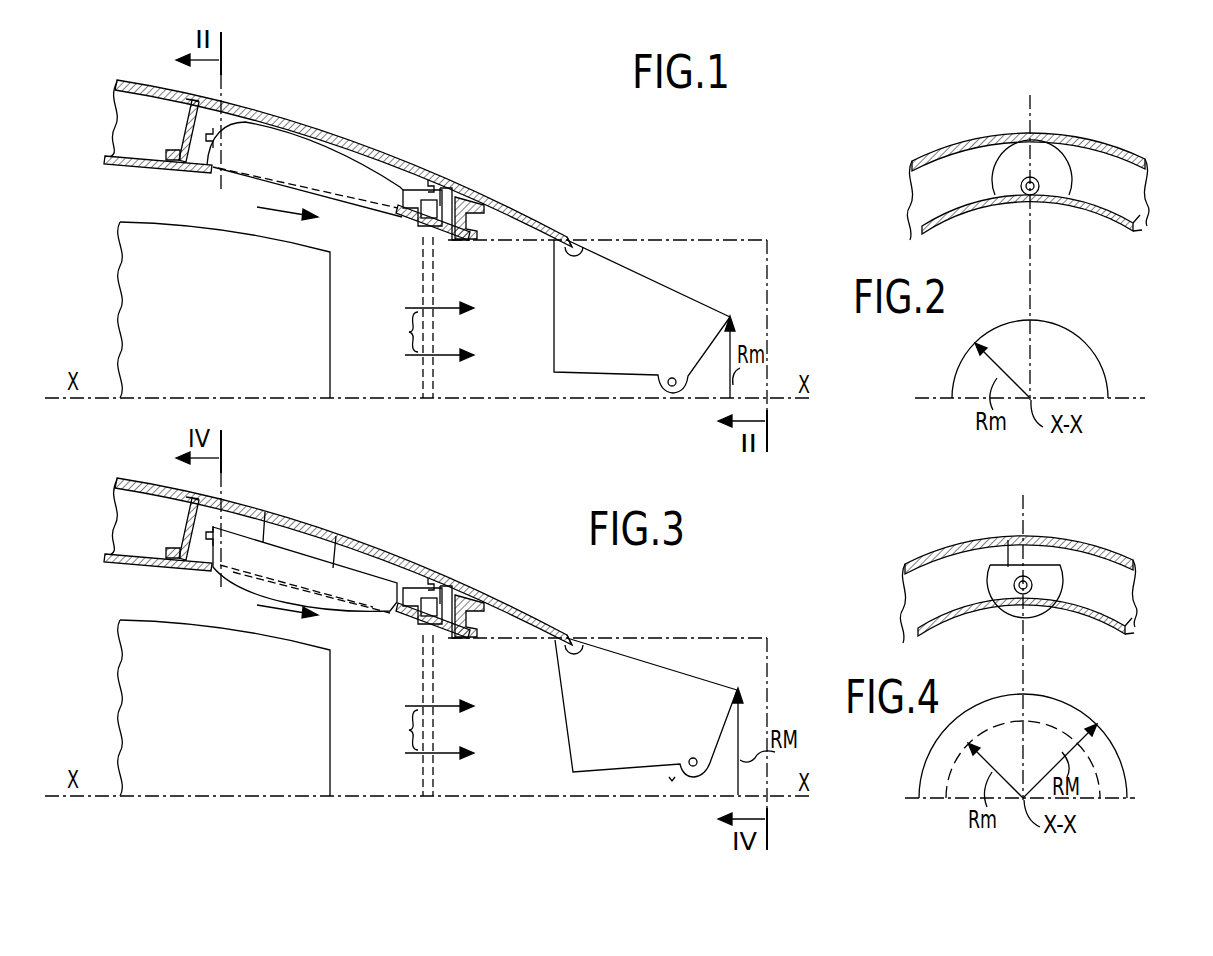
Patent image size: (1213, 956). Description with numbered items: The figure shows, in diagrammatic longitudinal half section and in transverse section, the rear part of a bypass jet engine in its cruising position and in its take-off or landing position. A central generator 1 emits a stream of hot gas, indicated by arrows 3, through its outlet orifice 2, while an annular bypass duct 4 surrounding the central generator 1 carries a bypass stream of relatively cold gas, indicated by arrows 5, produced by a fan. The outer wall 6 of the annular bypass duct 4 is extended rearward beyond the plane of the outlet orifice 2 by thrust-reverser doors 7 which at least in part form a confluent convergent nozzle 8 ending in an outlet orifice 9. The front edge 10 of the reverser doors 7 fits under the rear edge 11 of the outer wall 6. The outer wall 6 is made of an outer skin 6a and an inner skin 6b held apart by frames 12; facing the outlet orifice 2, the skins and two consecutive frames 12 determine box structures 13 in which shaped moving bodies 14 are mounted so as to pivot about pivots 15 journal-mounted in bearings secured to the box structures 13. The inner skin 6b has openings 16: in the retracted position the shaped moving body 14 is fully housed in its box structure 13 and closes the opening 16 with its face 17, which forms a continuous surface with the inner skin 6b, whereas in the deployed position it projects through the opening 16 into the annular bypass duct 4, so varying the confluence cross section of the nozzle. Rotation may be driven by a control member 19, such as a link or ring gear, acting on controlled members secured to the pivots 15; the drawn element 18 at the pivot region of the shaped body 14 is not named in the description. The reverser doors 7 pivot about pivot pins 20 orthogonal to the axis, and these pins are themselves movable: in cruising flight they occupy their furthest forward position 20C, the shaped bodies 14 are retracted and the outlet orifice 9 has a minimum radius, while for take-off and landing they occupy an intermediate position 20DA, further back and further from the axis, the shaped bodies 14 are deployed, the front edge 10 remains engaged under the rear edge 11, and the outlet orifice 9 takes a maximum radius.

In FIG. 1, the central generator 1 is at (242, 356).
In FIG. 3, the central generator 1 is at (224, 708).
In FIG. 1, the outlet orifice 2 is at (332, 372).
In FIG. 3, the outlet orifice 2 is at (427, 803).
In FIG. 1, the arrows (hot gas stream) 3 is at (437, 331).
In FIG. 3, the arrows (hot gas stream) 3 is at (437, 729).
In FIG. 1, the annular bypass duct 4 is at (185, 218).
In FIG. 3, the annular bypass duct 4 is at (177, 603).
In FIG. 1, the arrows (bypass stream) 5 is at (298, 223).
In FIG. 3, the arrows (bypass stream) 5 is at (298, 621).
In FIG. 1, the outer wall 6 is at (312, 118).
In FIG. 3, the outer wall 6 is at (328, 540).
In FIG. 1, the outer skin 6a is at (128, 80).
In FIG. 3, the outer skin 6a is at (332, 540).
In FIG. 2, the outer skin 6a is at (953, 150).
In FIG. 4, the outer skin 6a is at (948, 547).
In FIG. 1, the inner skin 6b is at (124, 170).
In FIG. 3, the inner skin 6b is at (277, 596).
In FIG. 1, the thrust-reverser doors 7 is at (640, 287).
In FIG. 3, the thrust-reverser doors 7 is at (640, 685).
In FIG. 1, the confluent convergent nozzle 8 is at (524, 347).
In FIG. 3, the confluent convergent nozzle 8 is at (524, 745).
In FIG. 3, the outlet orifice 9 is at (722, 743).
In FIG. 2, the outlet orifice 9 is at (1092, 388).
In FIG. 4, the outlet orifice 9 is at (1125, 783).
In FIG. 1, the front edge 10 is at (578, 251).
In FIG. 3, the front edge 10 is at (599, 615).
In FIG. 1, the rear edge 11 is at (567, 236).
In FIG. 3, the rear edge 11 is at (562, 608).
In FIG. 1, the frames 12 is at (183, 123).
In FIG. 3, the frames 12 is at (330, 583).
In FIG. 1, the box structures 13 is at (403, 167).
In FIG. 3, the box structures 13 is at (426, 560).
In FIG. 1, the shaped moving bodies 14 is at (340, 172).
In FIG. 3, the shaped moving bodies 14 is at (340, 570).
In FIG. 2, the shaped moving bodies 14 is at (1053, 177).
In FIG. 4, the shaped moving bodies 14 is at (1047, 577).
In FIG. 1, the pivots 15 is at (213, 128).
In FIG. 3, the pivots 15 is at (354, 523).
In FIG. 1, the openings 16 is at (207, 168).
In FIG. 3, the openings 16 is at (207, 566).
In FIG. 1, the face 17 is at (360, 213).
In FIG. 3, the face 17 is at (263, 513).
In FIG. 2, the face 17 is at (1010, 207).
In FIG. 4, the face 17 is at (1008, 540).
In FIG. 1, the pivot bolt 18 is at (455, 176).
In FIG. 3, the pivot bolt 18 is at (482, 595).
In FIG. 2, the pivot bolt 18 is at (1037, 180).
In FIG. 4, the pivot bolt 18 is at (1037, 577).
In FIG. 1, the control member 19 is at (435, 282).
In FIG. 3, the control member 19 is at (446, 715).
In FIG. 2, the control member 19 is at (1145, 212).
In FIG. 4, the control member 19 is at (1133, 615).
In FIG. 1, the pivot pins 20 is at (670, 377).
In FIG. 1, the furthest forward position of pivot pins 20C is at (675, 422).
In FIG. 3, the furthest forward position of pivot pins 20C is at (672, 782).
In FIG. 3, the intermediate position of pivot pins 20DA is at (692, 758).